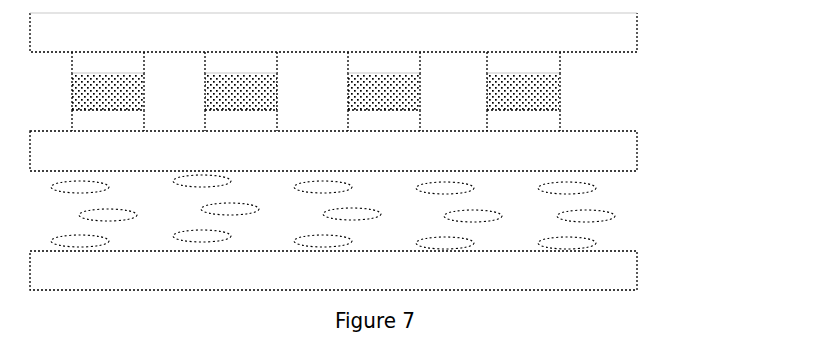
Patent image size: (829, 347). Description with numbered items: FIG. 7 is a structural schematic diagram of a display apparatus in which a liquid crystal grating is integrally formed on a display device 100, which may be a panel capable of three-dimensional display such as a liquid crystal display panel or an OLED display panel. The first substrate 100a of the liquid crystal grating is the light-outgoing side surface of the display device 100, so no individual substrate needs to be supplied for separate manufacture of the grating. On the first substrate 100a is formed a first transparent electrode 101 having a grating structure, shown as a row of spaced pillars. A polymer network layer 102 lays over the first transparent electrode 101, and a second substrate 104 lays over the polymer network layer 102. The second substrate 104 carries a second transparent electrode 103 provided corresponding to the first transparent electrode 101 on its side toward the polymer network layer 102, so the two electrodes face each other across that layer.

The second substrate 104 is at (637, 32).
The second transparent electrode 103 is at (560, 70).
The polymer network layer 102 is at (560, 97).
The first transparent electrode 101 is at (560, 125).
The first substrate 100a is at (637, 150).
The display device 100 is at (637, 170).